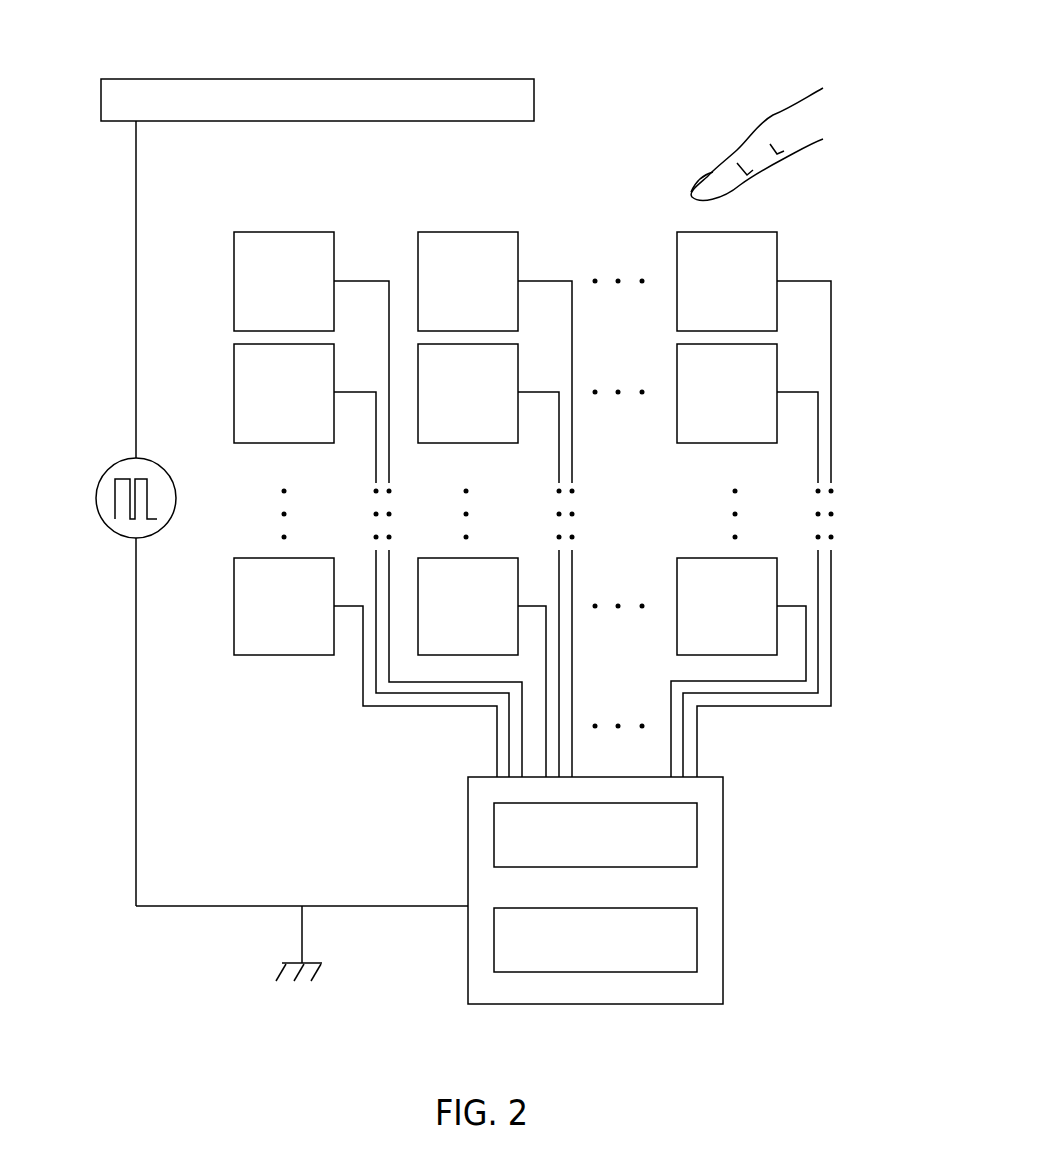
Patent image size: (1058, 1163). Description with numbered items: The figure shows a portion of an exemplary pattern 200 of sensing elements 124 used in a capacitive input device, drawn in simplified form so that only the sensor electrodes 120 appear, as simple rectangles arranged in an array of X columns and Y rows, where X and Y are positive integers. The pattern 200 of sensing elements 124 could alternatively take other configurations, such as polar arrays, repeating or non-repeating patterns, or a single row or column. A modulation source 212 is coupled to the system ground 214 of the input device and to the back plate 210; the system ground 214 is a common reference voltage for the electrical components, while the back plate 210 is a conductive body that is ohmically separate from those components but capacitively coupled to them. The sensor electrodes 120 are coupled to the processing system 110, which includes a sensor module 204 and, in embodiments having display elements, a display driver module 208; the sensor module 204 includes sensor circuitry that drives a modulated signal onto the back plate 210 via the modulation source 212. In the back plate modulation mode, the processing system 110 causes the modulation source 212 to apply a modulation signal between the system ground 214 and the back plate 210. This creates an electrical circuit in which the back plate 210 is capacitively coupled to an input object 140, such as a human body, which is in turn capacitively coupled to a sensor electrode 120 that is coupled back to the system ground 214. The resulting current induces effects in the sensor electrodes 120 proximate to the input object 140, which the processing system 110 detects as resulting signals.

The pattern of sensing elements 200 is at (656, 50).
The back plate 210 is at (430, 109).
The modulation source 212 is at (152, 459).
The system ground 214 is at (303, 926).
The sensing elements 124 is at (465, 215).
The sensor electrodes 120 is at (758, 620).
The input object 140 is at (820, 122).
The processing system 110 is at (620, 911).
The sensor module 204 is at (665, 862).
The display driver module 208 is at (595, 940).